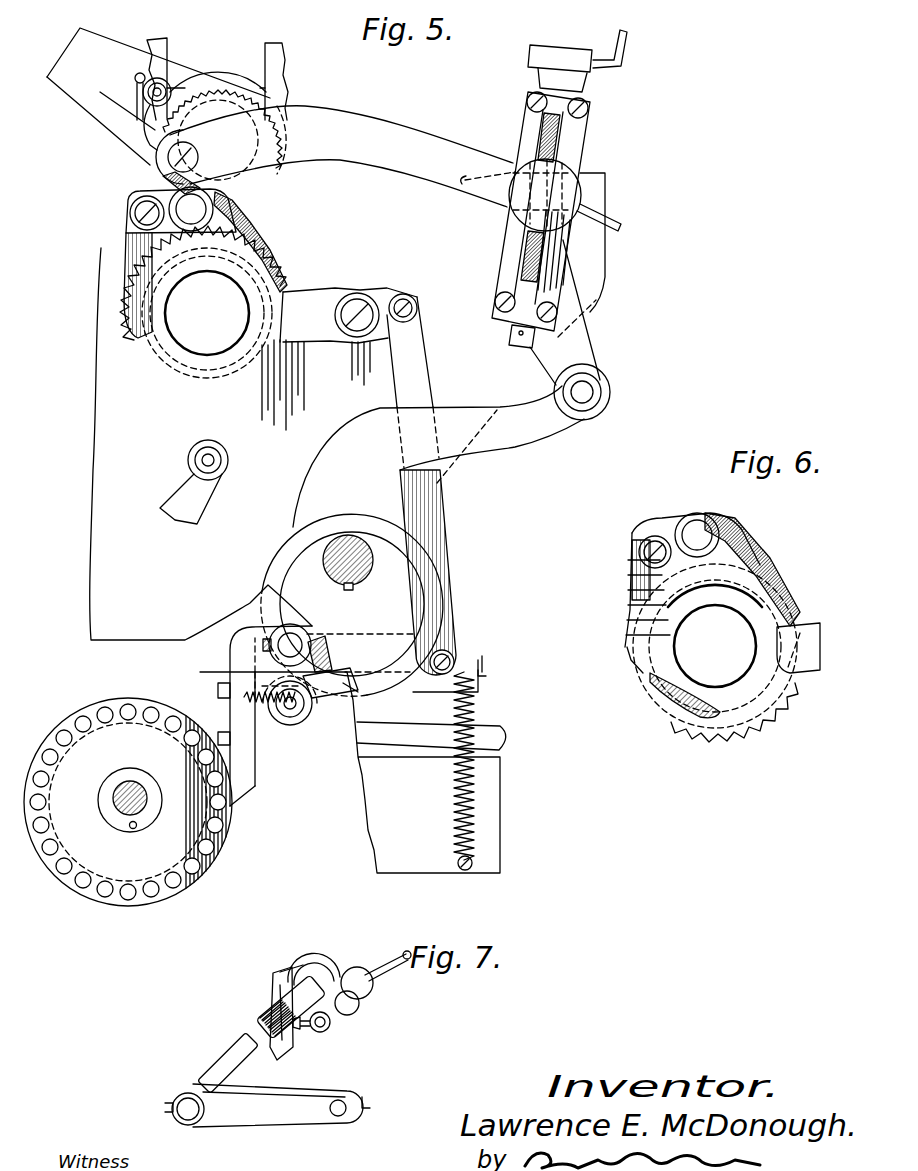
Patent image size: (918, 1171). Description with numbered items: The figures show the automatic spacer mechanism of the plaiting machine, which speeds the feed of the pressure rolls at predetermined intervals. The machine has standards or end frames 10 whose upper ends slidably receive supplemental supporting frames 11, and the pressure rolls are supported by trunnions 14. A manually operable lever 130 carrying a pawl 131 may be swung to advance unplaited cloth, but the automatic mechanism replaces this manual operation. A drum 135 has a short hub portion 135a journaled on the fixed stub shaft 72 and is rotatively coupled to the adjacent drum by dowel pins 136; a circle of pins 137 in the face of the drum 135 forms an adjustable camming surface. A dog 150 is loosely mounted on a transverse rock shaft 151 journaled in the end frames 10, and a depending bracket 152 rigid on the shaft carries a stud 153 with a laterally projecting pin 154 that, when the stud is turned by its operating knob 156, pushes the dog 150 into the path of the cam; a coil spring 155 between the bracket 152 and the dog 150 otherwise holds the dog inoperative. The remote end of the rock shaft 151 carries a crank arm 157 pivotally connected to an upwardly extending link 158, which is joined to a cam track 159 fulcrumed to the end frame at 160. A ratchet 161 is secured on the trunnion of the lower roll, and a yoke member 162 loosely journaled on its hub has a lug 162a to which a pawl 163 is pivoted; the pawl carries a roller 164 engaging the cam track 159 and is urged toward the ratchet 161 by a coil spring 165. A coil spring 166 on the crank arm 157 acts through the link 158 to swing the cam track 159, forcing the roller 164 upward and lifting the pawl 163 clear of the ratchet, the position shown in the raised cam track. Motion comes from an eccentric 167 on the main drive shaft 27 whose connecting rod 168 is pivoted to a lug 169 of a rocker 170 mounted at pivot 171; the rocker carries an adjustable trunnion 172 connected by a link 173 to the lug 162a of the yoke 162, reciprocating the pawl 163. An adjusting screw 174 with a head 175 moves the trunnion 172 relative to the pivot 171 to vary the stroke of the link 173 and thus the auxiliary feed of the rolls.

In FIG. 5, the standards or end frames 10 is at (488, 788).
In FIG. 5, the supplemental supporting frames 11 is at (288, 70).
In FIG. 5, the trunnions 14 is at (222, 104).
In FIG. 5, the main drive shaft 27 is at (373, 561).
In FIG. 5, the fixed stub shaft 72 is at (146, 807).
In FIG. 5, the manually operable lever 130 is at (103, 102).
In FIG. 5, the pawl 131 is at (110, 126).
In FIG. 5, the drum 135 is at (117, 860).
In FIG. 5, the hub portion 135a is at (130, 777).
In FIG. 5, the dowel pins 136 is at (130, 828).
In FIG. 5, the pins 137 is at (55, 782).
In FIG. 5, the dog 150 is at (245, 770).
In FIG. 7, the dog 150 is at (287, 1047).
In FIG. 5, the rock shaft 151 is at (292, 640).
In FIG. 7, the rock shaft 151 is at (240, 1043).
In FIG. 5, the depending bracket 152 is at (308, 684).
In FIG. 7, the depending bracket 152 is at (362, 1003).
In FIG. 5, the stud 153 is at (312, 704).
In FIG. 5, the laterally projecting pin 154 is at (262, 717).
In FIG. 7, the laterally projecting pin 154 is at (316, 1033).
In FIG. 5, the coil spring 155 is at (244, 676).
In FIG. 7, the coil spring 155 is at (340, 1023).
In FIG. 5, the operating knob 156 is at (303, 728).
In FIG. 7, the operating knob 156 is at (356, 967).
In FIG. 5, the crank arm 157 is at (322, 660).
In FIG. 7, the crank arm 157 is at (281, 1110).
In FIG. 5, the link 158 is at (438, 501).
In FIG. 5, the cam track 159 is at (258, 252).
In FIG. 6, the cam track 159 is at (795, 622).
In FIG. 5, the fulcrum 160 is at (357, 300).
In FIG. 5, the ratchet 161 is at (125, 338).
In FIG. 6, the ratchet 161 is at (760, 720).
In FIG. 5, the yoke member 162 is at (130, 240).
In FIG. 6, the yoke member 162 is at (680, 700).
In FIG. 5, the lug 162a is at (148, 190).
In FIG. 6, the lug 162a is at (632, 555).
In FIG. 5, the pawl 163 is at (162, 208).
In FIG. 6, the pawl 163 is at (665, 538).
In FIG. 5, the roller 164 is at (206, 203).
In FIG. 6, the roller 164 is at (700, 514).
In FIG. 5, the coil spring 165 is at (258, 224).
In FIG. 6, the coil spring 165 is at (745, 558).
In FIG. 5, the coil spring 166 is at (476, 704).
In FIG. 5, the eccentric 167 is at (410, 623).
In FIG. 5, the connecting rod 168 is at (537, 425).
In FIG. 5, the lug 169 is at (580, 338).
In FIG. 5, the rocker 170 is at (563, 258).
In FIG. 5, the pivot 171 is at (545, 275).
In FIG. 5, the adjustable trunnion 172 is at (588, 162).
In FIG. 5, the link 173 is at (398, 138).
In FIG. 5, the adjusting screw 174 is at (565, 128).
In FIG. 5, the head 175 is at (573, 36).